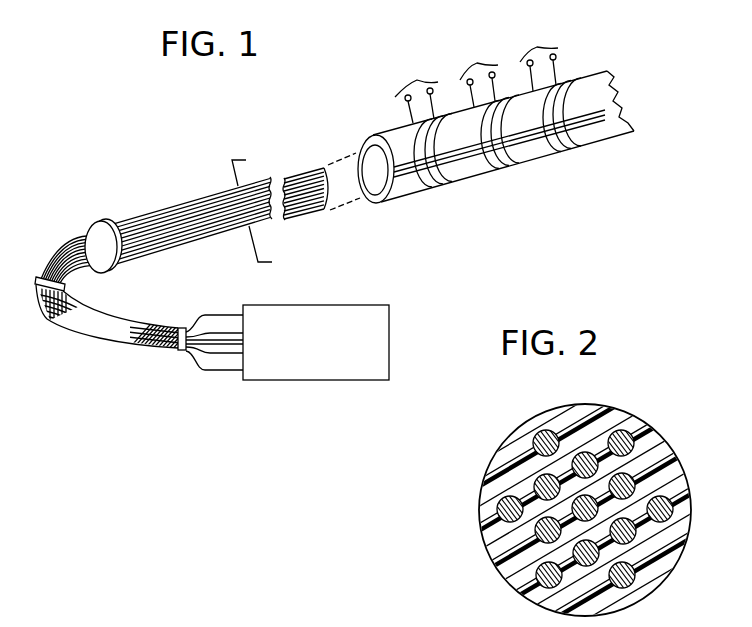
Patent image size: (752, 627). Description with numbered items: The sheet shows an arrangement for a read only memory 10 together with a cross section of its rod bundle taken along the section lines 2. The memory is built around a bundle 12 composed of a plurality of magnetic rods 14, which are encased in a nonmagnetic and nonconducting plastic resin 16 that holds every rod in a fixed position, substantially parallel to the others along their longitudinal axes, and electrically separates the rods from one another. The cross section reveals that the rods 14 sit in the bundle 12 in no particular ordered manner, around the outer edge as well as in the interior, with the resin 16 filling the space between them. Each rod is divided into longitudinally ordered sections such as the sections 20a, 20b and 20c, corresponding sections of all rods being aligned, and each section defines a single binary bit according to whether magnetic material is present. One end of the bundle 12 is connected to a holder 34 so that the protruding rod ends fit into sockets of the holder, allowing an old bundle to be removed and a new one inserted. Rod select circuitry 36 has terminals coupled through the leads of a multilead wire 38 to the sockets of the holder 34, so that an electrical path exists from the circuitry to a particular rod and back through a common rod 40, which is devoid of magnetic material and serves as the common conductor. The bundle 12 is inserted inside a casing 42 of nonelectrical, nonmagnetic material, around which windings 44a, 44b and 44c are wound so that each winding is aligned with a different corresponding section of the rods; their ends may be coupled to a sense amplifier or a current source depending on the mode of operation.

In FIG. 1, the read only memory 10 is at (252, 116).
In FIG. 1, the bundle 12 is at (232, 213).
In FIG. 2, the bundle 12 is at (580, 484).
In FIG. 1, the magnetic rods 14 is at (208, 228).
In FIG. 2, the magnetic rods 14 is at (645, 416).
In FIG. 1, the plastic resin 16 is at (221, 189).
In FIG. 2, the plastic resin 16 is at (513, 457).
In FIG. 1, the section lines 2— 2 is at (259, 206).
In FIG. 1, the section 20a is at (415, 90).
In FIG. 1, the section 20b is at (476, 74).
In FIG. 1, the section 20c is at (534, 55).
In FIG. 1, the holder 34 is at (107, 223).
In FIG. 1, the rod select circuitry 36 is at (389, 325).
In FIG. 1, the multilead wire 38 is at (80, 334).
In FIG. 1, the common rod 40 is at (181, 192).
In FIG. 2, the common rod 40 is at (674, 504).
In FIG. 1, the casing 42 is at (549, 163).
In FIG. 1, the winding 44a is at (439, 188).
In FIG. 1, the winding 44b is at (505, 170).
In FIG. 1, the winding 44c is at (573, 152).